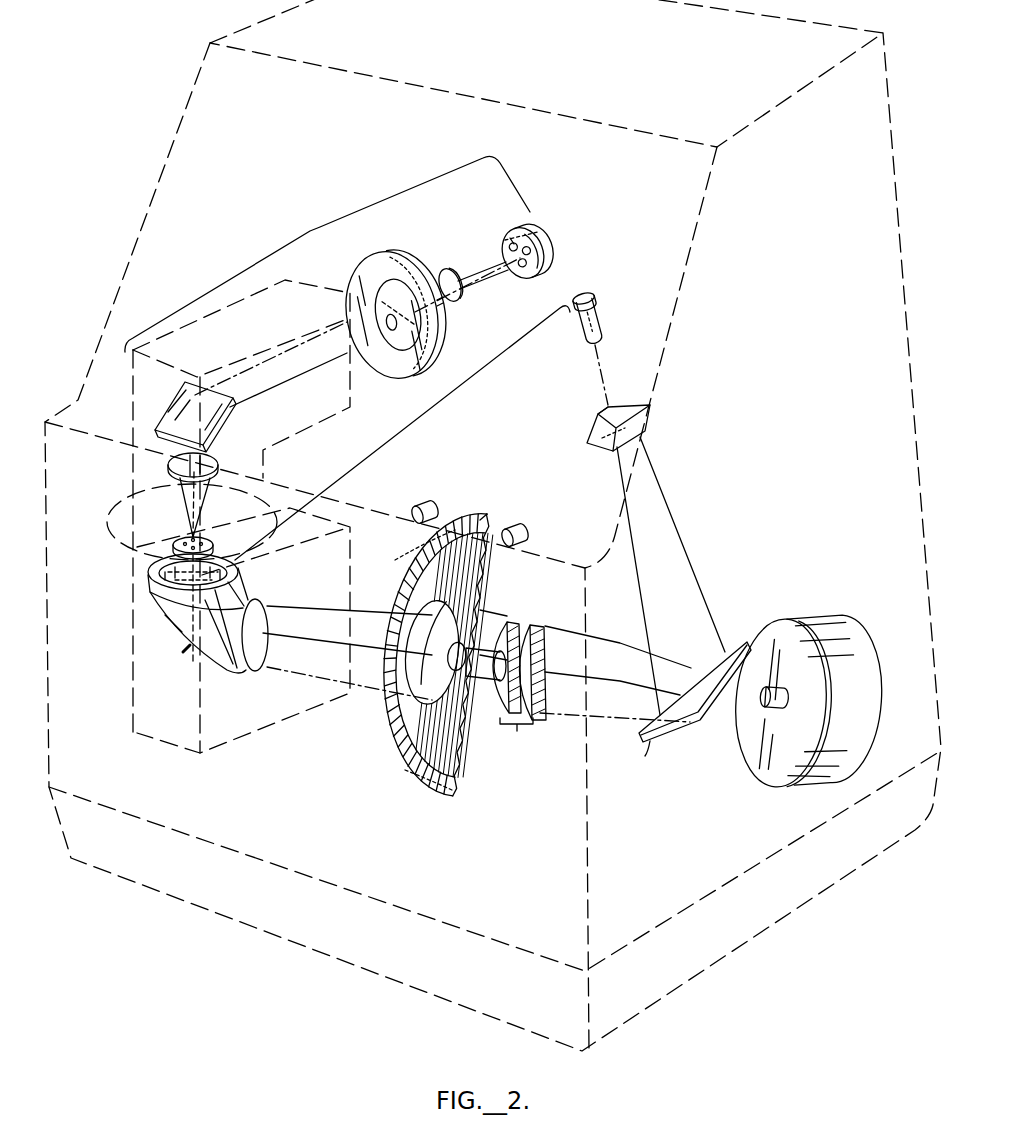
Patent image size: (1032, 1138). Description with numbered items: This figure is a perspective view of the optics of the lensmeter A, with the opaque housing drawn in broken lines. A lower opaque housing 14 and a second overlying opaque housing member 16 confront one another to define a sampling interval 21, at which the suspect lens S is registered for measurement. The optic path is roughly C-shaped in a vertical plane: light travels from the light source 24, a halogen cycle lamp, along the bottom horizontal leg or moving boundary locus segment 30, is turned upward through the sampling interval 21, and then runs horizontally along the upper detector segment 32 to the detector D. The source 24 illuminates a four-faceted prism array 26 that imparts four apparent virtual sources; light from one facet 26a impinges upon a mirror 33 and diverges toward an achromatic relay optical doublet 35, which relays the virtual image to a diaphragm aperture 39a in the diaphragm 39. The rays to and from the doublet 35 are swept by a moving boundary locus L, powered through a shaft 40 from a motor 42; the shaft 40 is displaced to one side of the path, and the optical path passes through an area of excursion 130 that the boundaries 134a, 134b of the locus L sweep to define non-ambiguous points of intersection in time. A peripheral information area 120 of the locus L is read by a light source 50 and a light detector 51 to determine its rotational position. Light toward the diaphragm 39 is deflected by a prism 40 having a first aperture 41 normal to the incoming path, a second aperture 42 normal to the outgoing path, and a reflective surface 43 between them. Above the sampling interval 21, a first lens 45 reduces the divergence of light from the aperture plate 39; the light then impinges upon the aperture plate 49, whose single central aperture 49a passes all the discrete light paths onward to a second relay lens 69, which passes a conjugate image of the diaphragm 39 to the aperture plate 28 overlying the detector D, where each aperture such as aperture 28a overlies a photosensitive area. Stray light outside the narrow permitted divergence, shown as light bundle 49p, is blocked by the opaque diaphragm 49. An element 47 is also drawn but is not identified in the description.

The lensmeter A is at (713, 122).
The opaque housing 14 is at (271, 724).
The second overlying opaque housing member 16 is at (231, 347).
The sampling interval 21 is at (107, 485).
The light source 24 is at (599, 312).
The prism array 26 is at (650, 407).
The prism facet 26a is at (598, 432).
The aperture plate 28 is at (545, 258).
The aperture 28a is at (508, 240).
The detector D is at (535, 228).
The moving boundary locus segment 30 is at (385, 442).
The detector segment 32 is at (316, 232).
The mirror 33 is at (646, 756).
The achromatic relay optical doublet 35 is at (519, 690).
The diaphragm 39 is at (183, 540).
The diaphragm aperture 39a is at (238, 572).
The shaft 40 is at (770, 712).
The first aperture 41 is at (268, 630).
The motor 42 is at (866, 672).
The reflective surface 43 is at (186, 632).
The lens 45 is at (170, 459).
The mirror 47 is at (166, 413).
The aperture plate 49 is at (374, 256).
The light bundle 49p is at (352, 270).
The central aperture 49a is at (392, 326).
The light source 50 is at (524, 528).
The light detector 51 is at (433, 500).
The second relay lens 69 is at (453, 272).
The peripheral information area 120 is at (486, 512).
The area of excursion 130 is at (386, 720).
The boundary 134a is at (420, 566).
The boundary 134b is at (400, 777).
The moving boundary locus L is at (410, 790).
The suspect lens S is at (130, 486).